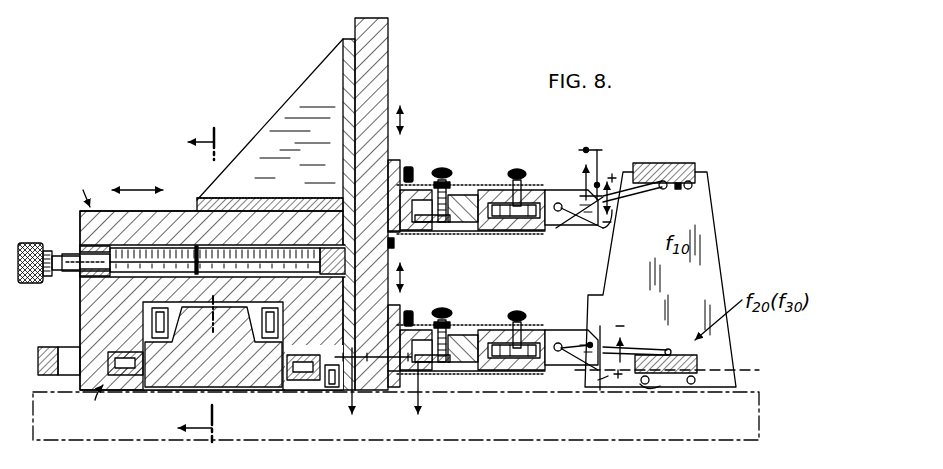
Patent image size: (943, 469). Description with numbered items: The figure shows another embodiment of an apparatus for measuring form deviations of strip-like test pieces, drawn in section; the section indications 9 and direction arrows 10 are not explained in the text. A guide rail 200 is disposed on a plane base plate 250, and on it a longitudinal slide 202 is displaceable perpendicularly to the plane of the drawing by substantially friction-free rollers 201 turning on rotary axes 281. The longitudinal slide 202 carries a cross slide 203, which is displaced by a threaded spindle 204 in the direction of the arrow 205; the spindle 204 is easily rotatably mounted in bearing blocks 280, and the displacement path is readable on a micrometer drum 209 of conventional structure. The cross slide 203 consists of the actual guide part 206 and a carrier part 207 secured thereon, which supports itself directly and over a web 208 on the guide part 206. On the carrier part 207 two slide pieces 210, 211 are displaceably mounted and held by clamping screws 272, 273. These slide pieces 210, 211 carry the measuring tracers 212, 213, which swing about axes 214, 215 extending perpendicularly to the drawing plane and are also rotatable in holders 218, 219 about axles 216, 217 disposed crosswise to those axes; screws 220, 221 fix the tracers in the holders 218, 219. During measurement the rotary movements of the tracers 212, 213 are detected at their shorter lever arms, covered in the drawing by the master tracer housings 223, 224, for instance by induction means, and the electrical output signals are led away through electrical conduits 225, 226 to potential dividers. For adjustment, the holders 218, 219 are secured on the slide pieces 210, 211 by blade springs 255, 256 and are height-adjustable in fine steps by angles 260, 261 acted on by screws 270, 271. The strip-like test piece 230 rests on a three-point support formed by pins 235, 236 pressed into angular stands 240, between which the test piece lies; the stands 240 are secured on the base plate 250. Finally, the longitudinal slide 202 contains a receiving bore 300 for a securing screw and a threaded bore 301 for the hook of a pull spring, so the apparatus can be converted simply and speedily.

The section line 9- 9 is at (208, 286).
The direction arrows 10 is at (386, 383).
The guide rail 200 is at (226, 376).
The rollers 201 is at (135, 378).
The longitudinal slide 202 is at (94, 412).
The cross slide 203 is at (81, 186).
The threaded spindle 204 is at (176, 250).
The arrow 205 is at (141, 186).
The guide part 206 is at (80, 214).
The carrier part 207 is at (389, 52).
The web 208 is at (282, 104).
The micrometer drum 209 is at (50, 279).
The slide piece 210 is at (408, 186).
The slide piece 211 is at (390, 392).
The measuring tracer 212 is at (680, 202).
The measuring tracer 213 is at (622, 350).
The axis 214 is at (604, 232).
The axis 215 is at (560, 372).
The axle 216 is at (548, 226).
The axle 217 is at (518, 330).
The holder 218 is at (515, 232).
The holder 219 is at (505, 376).
The screw 220 is at (518, 176).
The screw 221 is at (528, 333).
The master tracer housing 223 is at (584, 195).
The master tracer housing 224 is at (596, 372).
The electrical conduit 225 is at (598, 152).
The electrical conduit 226 is at (592, 294).
The strip-like test piece 230 is at (696, 166).
The pin 235 is at (699, 185).
The pin 236 is at (672, 384).
The angular stand 240 is at (600, 380).
The base plate 250 is at (183, 442).
The blade spring 255 is at (468, 195).
The blade spring 256 is at (470, 374).
The angle 260 is at (455, 233).
The angle 261 is at (450, 374).
The screw 270 is at (446, 176).
The screw 271 is at (446, 316).
The clamping screw 272 is at (428, 118).
The clamping screw 273 is at (415, 322).
The bearing block 280 is at (78, 247).
The rotary axis 281 is at (312, 382).
The receiving bore 300 is at (62, 375).
The threaded bore 301 is at (363, 391).